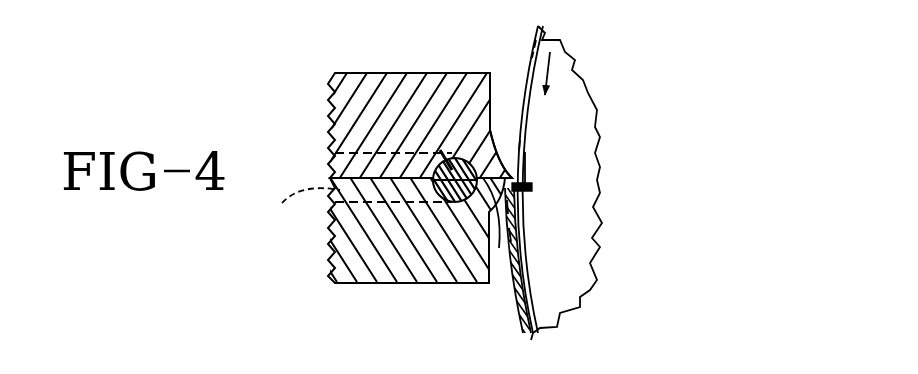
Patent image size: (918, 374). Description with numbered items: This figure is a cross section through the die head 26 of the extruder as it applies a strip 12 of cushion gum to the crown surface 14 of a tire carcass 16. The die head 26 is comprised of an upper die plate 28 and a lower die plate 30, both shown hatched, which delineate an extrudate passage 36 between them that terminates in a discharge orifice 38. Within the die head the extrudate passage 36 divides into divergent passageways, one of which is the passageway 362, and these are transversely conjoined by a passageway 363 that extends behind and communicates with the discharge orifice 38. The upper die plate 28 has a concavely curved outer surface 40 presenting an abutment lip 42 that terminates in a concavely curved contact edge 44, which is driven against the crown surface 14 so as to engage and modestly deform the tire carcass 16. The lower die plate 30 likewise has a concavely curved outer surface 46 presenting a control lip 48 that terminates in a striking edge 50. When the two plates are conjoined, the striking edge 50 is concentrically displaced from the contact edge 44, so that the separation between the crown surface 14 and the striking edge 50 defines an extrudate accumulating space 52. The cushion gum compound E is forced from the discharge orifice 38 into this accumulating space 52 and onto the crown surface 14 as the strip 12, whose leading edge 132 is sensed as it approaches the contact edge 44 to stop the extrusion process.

The strip 12 is at (509, 286).
The crown surface 14 is at (523, 68).
The tire carcass 16 is at (578, 71).
The die head 26 is at (345, 297).
The upper die plate 28 is at (355, 117).
The lower die plate 30 is at (384, 256).
The extrudate passage 36 is at (397, 239).
The divergent passageway 362 is at (303, 215).
The transverse passageway 363 is at (457, 204).
The discharge orifice 38 is at (500, 180).
The outer surface 40 is at (490, 100).
The abutment lip 42 is at (520, 147).
The contact edge 44 is at (515, 173).
The outer surface 46 is at (512, 262).
The control lip 48 is at (509, 234).
The striking edge 50 is at (507, 206).
The extrudate accumulating space 52 is at (535, 187).
The leading edge 132 is at (522, 326).
The cushion gum compound E is at (447, 160).